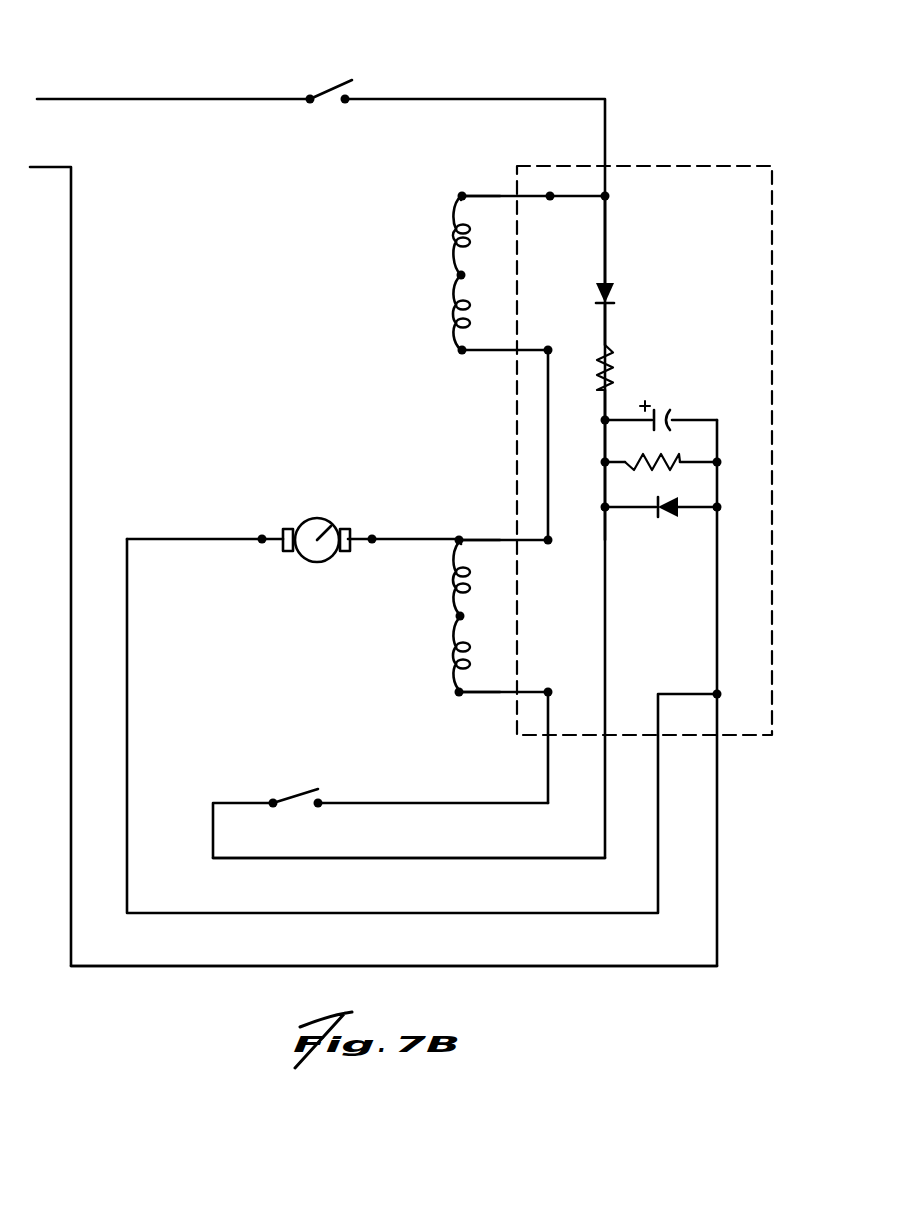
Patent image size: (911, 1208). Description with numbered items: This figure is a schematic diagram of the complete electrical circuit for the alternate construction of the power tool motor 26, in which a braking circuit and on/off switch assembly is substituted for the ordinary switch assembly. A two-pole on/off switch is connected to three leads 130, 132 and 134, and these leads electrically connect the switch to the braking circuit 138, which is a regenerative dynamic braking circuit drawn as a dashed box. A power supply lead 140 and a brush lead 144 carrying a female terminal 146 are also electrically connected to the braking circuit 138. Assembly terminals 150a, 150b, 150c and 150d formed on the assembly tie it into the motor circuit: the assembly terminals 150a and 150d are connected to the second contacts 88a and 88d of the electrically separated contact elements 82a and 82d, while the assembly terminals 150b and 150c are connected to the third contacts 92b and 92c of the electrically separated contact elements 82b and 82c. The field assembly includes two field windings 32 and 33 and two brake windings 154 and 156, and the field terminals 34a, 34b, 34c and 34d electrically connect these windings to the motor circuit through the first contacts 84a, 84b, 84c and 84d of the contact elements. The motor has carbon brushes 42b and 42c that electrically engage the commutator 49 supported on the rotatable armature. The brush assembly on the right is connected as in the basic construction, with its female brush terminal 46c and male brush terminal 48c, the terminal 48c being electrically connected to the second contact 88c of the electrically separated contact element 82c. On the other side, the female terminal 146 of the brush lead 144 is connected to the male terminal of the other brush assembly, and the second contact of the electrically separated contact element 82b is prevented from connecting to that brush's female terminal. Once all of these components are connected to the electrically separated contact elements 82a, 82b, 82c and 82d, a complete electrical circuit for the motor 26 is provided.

The motor 26 is at (182, 88).
The lead 130 is at (415, 94).
The braking circuit 138 is at (714, 163).
The assembly terminal 150d is at (494, 163).
The second contact 88d is at (551, 190).
The first contact 84d is at (362, 205).
The field terminal 34d is at (455, 198).
The field winding 32 is at (452, 238).
The electrically separated contact element 82d is at (496, 202).
The field winding 33 is at (452, 300).
The field terminal 34a is at (396, 353).
The first contact 84a is at (455, 351).
The electrically separated contact element 82a is at (492, 358).
The second contact 88a is at (658, 308).
The assembly terminal 150a is at (556, 348).
The assembly terminal 150c is at (435, 488).
The third contact 92c is at (539, 532).
The second contact 88c is at (339, 505).
The female brush terminal 46c is at (372, 531).
The electrically separated contact element 82c is at (496, 534).
The female terminal 146 is at (189, 526).
The male brush terminal 48c is at (258, 534).
The carbon brush 42c is at (342, 528).
The carbon brush 42b is at (286, 547).
The commutator 49 is at (312, 548).
The first contact 84c is at (369, 576).
The field terminal 34c is at (447, 550).
The brake winding 154 is at (466, 590).
The brake winding 156 is at (466, 647).
The field terminal 34b is at (398, 699).
The first contact 84b is at (452, 694).
The electrically separated contact element 82b is at (492, 700).
The third contact 92b is at (459, 747).
The assembly terminal 150b is at (538, 700).
The lead 132 is at (357, 800).
The lead 134 is at (380, 855).
The brush lead 144 is at (427, 910).
The power supply lead 140 is at (477, 963).